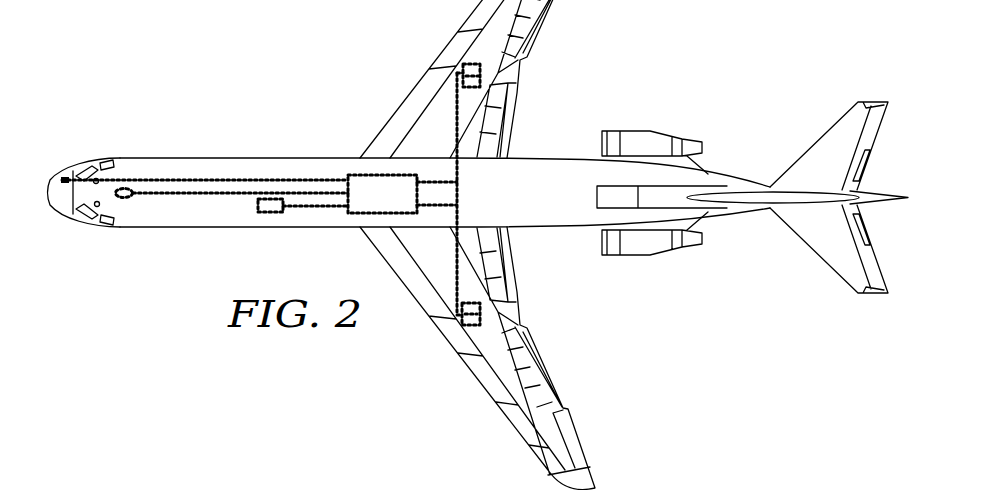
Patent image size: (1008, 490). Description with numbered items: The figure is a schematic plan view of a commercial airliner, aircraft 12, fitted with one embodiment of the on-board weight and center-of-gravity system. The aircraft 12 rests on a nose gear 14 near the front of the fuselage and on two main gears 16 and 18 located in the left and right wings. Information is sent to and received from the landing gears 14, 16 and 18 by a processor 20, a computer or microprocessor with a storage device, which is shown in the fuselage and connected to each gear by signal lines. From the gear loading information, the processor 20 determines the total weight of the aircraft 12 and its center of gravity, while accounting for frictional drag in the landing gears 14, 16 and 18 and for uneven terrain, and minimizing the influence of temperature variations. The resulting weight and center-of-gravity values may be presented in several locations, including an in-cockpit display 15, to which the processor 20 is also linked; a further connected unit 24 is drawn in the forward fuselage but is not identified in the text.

The aircraft 12 is at (202, 138).
The nose gear 14 is at (127, 201).
The in-cockpit display 15 is at (62, 175).
The main gear 16 is at (471, 326).
The main gear 18 is at (473, 63).
The processor 20 is at (360, 173).
The cockpit display 24 is at (273, 215).